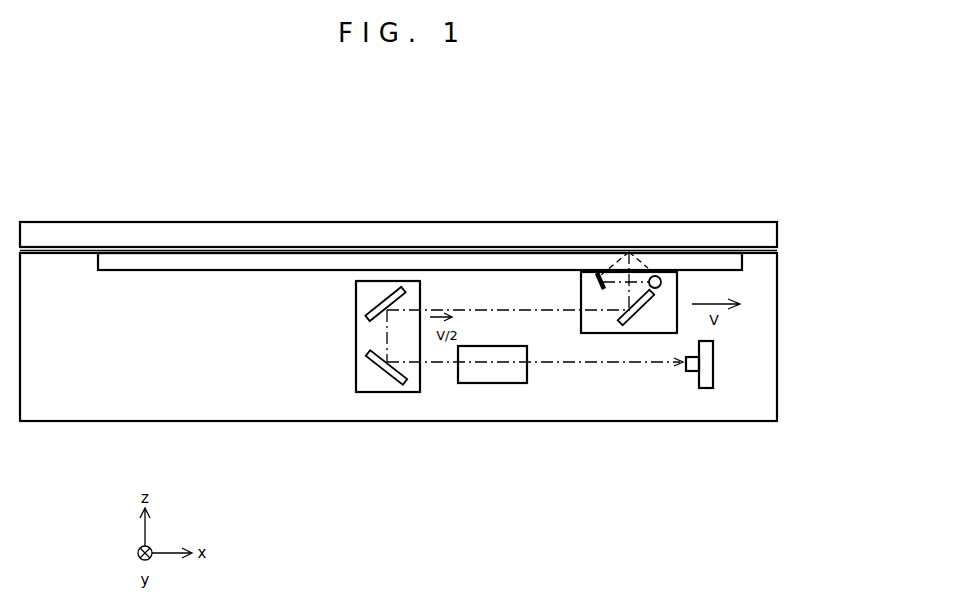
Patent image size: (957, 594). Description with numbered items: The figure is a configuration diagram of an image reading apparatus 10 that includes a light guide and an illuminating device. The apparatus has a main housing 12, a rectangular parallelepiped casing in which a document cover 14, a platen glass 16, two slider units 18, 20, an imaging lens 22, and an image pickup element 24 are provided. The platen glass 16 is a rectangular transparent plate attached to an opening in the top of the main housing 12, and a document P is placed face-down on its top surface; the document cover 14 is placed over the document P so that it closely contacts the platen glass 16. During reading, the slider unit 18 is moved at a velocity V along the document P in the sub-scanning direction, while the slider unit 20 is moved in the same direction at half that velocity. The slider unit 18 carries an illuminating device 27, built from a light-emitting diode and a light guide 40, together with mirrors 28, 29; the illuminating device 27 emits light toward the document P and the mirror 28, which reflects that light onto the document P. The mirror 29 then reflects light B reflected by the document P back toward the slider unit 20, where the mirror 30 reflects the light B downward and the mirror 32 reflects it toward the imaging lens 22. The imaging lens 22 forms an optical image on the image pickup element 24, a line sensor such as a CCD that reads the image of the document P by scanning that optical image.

The image reading apparatus 10 is at (98, 93).
The main housing 12 is at (777, 337).
The document cover 14 is at (497, 222).
The document P is at (476, 250).
The platen glass 16 is at (263, 260).
The slider unit 18 is at (627, 333).
The slider unit 20 is at (420, 290).
The imaging lens 22 is at (494, 383).
The image pickup element 24 is at (707, 388).
The illuminating device 27 is at (674, 284).
The mirror 28 is at (596, 279).
The mirror 29 is at (625, 322).
The mirror 30 is at (383, 303).
The mirror 32 is at (393, 382).
The light guide 40 is at (661, 278).
The light B is at (632, 270).